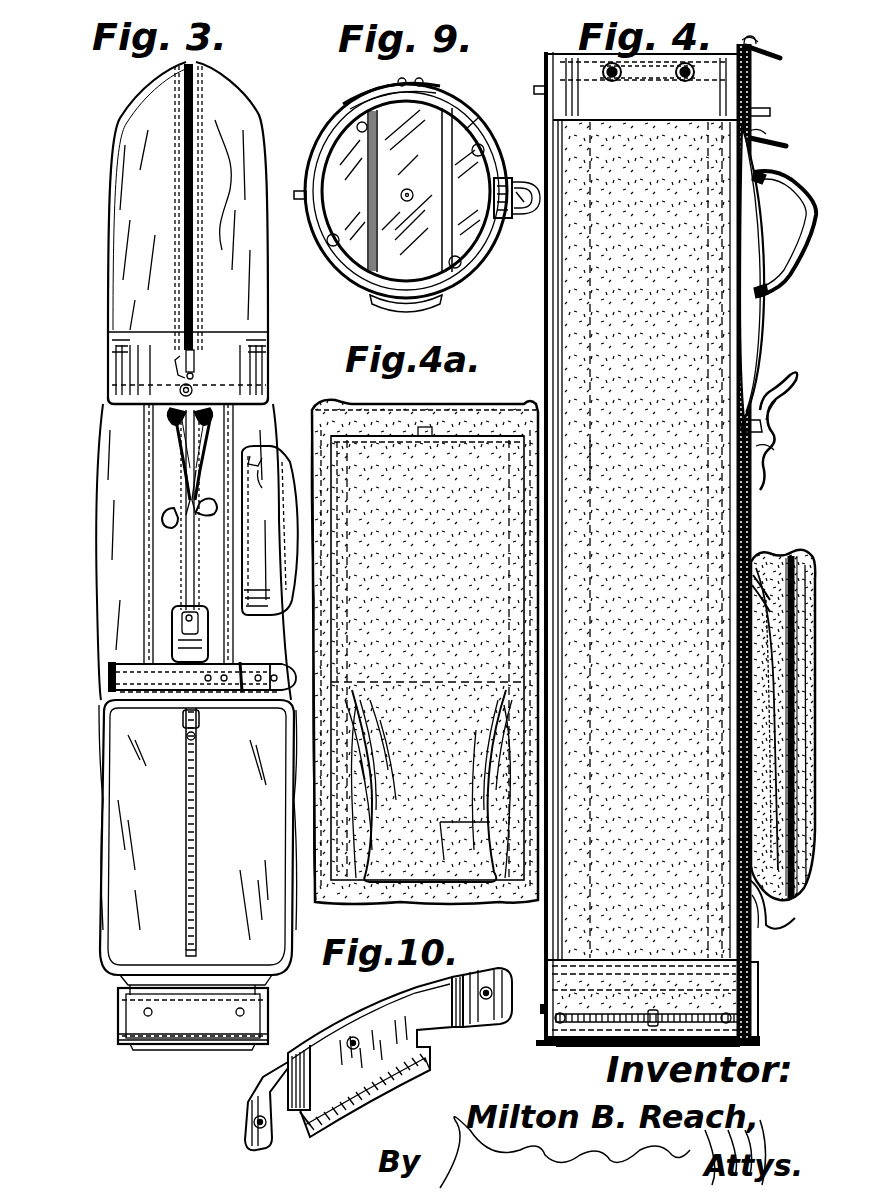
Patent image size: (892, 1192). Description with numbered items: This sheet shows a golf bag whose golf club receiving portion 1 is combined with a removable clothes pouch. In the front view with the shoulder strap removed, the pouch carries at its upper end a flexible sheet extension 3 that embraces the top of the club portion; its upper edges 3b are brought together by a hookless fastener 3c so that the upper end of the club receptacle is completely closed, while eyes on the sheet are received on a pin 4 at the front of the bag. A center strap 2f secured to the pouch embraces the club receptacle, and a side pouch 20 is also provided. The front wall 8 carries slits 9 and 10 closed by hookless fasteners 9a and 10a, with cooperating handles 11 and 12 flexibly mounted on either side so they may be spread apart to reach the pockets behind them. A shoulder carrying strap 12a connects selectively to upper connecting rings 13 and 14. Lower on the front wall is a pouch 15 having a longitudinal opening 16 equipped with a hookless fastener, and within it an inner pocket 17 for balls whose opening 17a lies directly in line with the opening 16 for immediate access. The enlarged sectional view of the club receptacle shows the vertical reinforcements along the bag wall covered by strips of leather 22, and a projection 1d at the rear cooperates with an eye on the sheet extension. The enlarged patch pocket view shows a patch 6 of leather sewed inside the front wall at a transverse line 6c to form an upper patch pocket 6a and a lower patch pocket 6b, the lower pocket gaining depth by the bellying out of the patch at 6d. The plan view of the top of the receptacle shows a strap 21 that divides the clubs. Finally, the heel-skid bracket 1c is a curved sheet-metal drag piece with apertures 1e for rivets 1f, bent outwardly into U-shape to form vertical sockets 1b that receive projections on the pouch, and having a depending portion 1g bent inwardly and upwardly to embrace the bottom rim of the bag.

In FIG. 9, the golf club receiving portion 1 is at (470, 278).
In FIG. 4, the golf club receiving portion 1 is at (552, 306).
In FIG. 4A, the golf club receiving portion 1 is at (488, 406).
In FIG. 10, the vertical sockets 1b is at (290, 1054).
In FIG. 4, the heel-skid bracket 1c is at (542, 1044).
In FIG. 10, the heel-skid bracket 1c is at (362, 1020).
In FIG. 9, the projection 1d is at (296, 202).
In FIG. 4, the projection 1d is at (536, 88).
In FIG. 10, the apertures 1e is at (248, 1126).
In FIG. 4, the rivets 1f is at (542, 1010).
In FIG. 3, the depending portion 1g is at (178, 1052).
In FIG. 4, the depending portion 1g is at (556, 1050).
In FIG. 10, the depending portion 1g is at (312, 1136).
In FIG. 3, the center strap 2f is at (110, 678).
In FIG. 3, the flexible sheet extension 3 is at (228, 110).
In FIG. 3, the upper edges of sheet 3b is at (195, 93).
In FIG. 3, the hookless fastener 3c is at (197, 352).
In FIG. 3, the pin 4 is at (180, 392).
In FIG. 9, the pin 4 is at (526, 212).
In FIG. 4, the pin 4 is at (764, 108).
In FIG. 4A, the patch 6 is at (470, 442).
In FIG. 4, the upper patch pocket 6a is at (734, 212).
In FIG. 4A, the upper patch pocket 6a is at (427, 659).
In FIG. 4, the lower patch pocket 6b is at (736, 368).
In FIG. 4A, the lower patch pocket 6b is at (428, 786).
In FIG. 4A, the transverse sewing line 6c is at (446, 682).
In FIG. 4, the bellied-out portion of patch 6d is at (736, 422).
In FIG. 4A, the bellied-out portion of patch 6d is at (372, 830).
In FIG. 4, the front wall 8 is at (748, 640).
In FIG. 3, the slit opening 9 is at (172, 430).
In FIG. 3, the hookless fastener 9a is at (172, 514).
In FIG. 3, the slit opening 10 is at (190, 556).
In FIG. 3, the hookless fastener 10a is at (180, 530).
In FIG. 3, the handle 11 is at (184, 454).
In FIG. 3, the handle 12 is at (188, 492).
In FIG. 4, the handle 12 is at (784, 260).
In FIG. 4, the shoulder carrying strap 12a is at (778, 392).
In FIG. 9, the upper connecting ring 13 is at (524, 182).
In FIG. 4, the upper connecting ring 13 is at (760, 66).
In FIG. 4, the upper connecting ring 14 is at (762, 136).
In FIG. 3, the pouch 15 is at (130, 752).
In FIG. 4, the pouch 15 is at (772, 554).
In FIG. 3, the longitudinal opening 16 is at (186, 864).
In FIG. 4, the longitudinal opening 16 is at (798, 556).
In FIG. 4, the inner pocket 17 is at (752, 682).
In FIG. 4, the inner pocket opening 17a is at (776, 730).
In FIG. 3, the side pouch 20 is at (262, 452).
In FIG. 9, the strap 21 is at (446, 156).
In FIG. 3, the leather strips 22 is at (142, 604).
In FIG. 4, the leather strips 22 is at (592, 464).